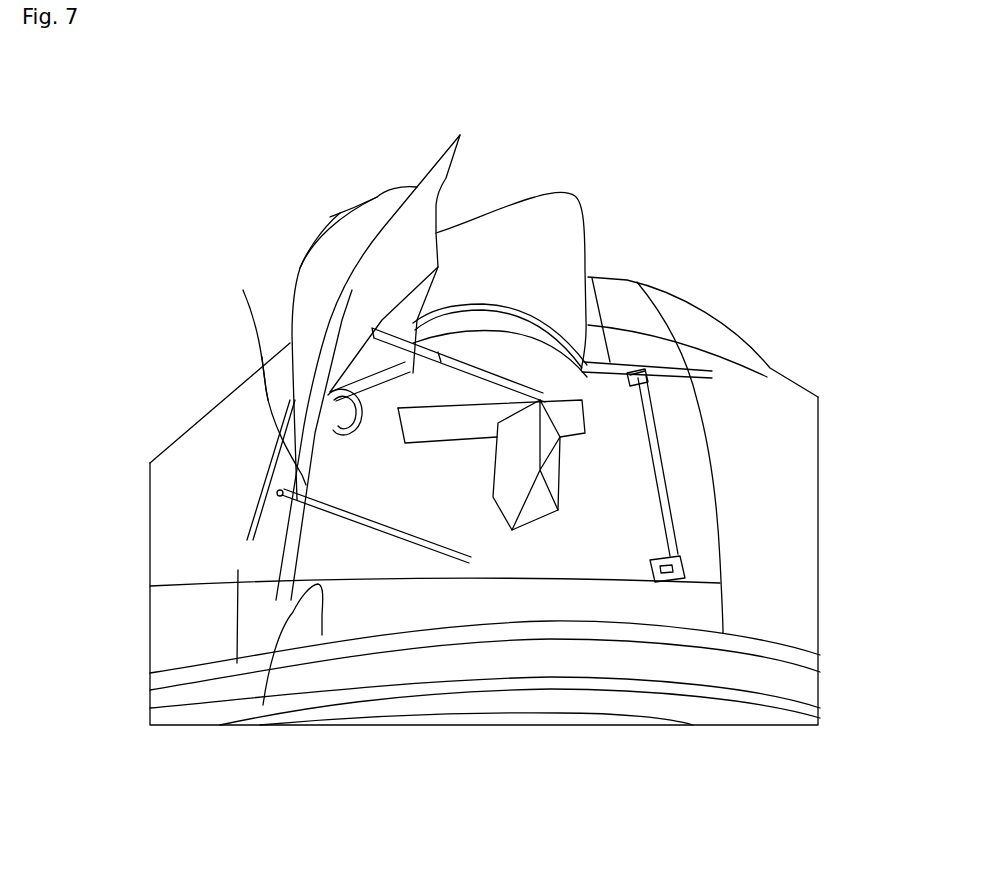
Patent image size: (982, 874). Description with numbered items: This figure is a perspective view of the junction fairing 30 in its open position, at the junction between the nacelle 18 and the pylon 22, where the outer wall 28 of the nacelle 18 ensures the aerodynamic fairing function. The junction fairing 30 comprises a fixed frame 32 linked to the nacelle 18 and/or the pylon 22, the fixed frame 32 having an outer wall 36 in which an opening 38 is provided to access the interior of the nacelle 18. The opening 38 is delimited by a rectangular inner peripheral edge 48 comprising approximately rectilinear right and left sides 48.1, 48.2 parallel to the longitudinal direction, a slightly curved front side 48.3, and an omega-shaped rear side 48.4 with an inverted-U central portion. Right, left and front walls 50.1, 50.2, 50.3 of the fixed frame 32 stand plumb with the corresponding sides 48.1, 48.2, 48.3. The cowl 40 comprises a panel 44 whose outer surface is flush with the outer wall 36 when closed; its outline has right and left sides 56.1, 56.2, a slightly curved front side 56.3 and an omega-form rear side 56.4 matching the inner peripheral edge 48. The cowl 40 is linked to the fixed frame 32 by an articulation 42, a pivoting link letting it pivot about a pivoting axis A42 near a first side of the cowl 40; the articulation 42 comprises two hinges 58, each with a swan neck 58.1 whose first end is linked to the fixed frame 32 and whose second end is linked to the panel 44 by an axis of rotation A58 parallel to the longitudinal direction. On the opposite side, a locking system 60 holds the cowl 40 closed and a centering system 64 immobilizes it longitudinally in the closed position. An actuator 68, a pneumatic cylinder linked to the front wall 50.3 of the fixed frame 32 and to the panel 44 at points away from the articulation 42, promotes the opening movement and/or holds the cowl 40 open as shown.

The nacelle 18 is at (772, 497).
The pylon 22 is at (572, 200).
The outer wall 28 is at (785, 392).
The junction fairing 30 is at (275, 307).
The fixed frame 32 is at (665, 450).
The outer wall 36 is at (686, 545).
The opening 38 is at (473, 440).
The cowl 40 is at (317, 265).
The articulation 42 is at (212, 760).
The panel 44 is at (393, 247).
The inner peripheral edge 48 is at (290, 527).
The right side 48.1 is at (255, 595).
The left side 48.2 is at (691, 468).
The front side 48.3 is at (597, 574).
The rear side 48.4 is at (545, 350).
The right wall 50.1 is at (318, 423).
The left wall 50.2 is at (665, 450).
The front wall 50.3 is at (437, 390).
The right side 56.1 is at (262, 568).
The left side 56.2 is at (448, 178).
The front side 56.3 is at (281, 616).
The rear side 56.4 is at (330, 217).
The hinge 58 is at (350, 645).
The swan neck 58.1 is at (350, 645).
The locking system 60 is at (646, 412).
The centering system 64 is at (633, 368).
The actuator 68 is at (522, 367).
The pivoting axis A42 is at (150, 673).
The axis of rotation A58 is at (258, 560).